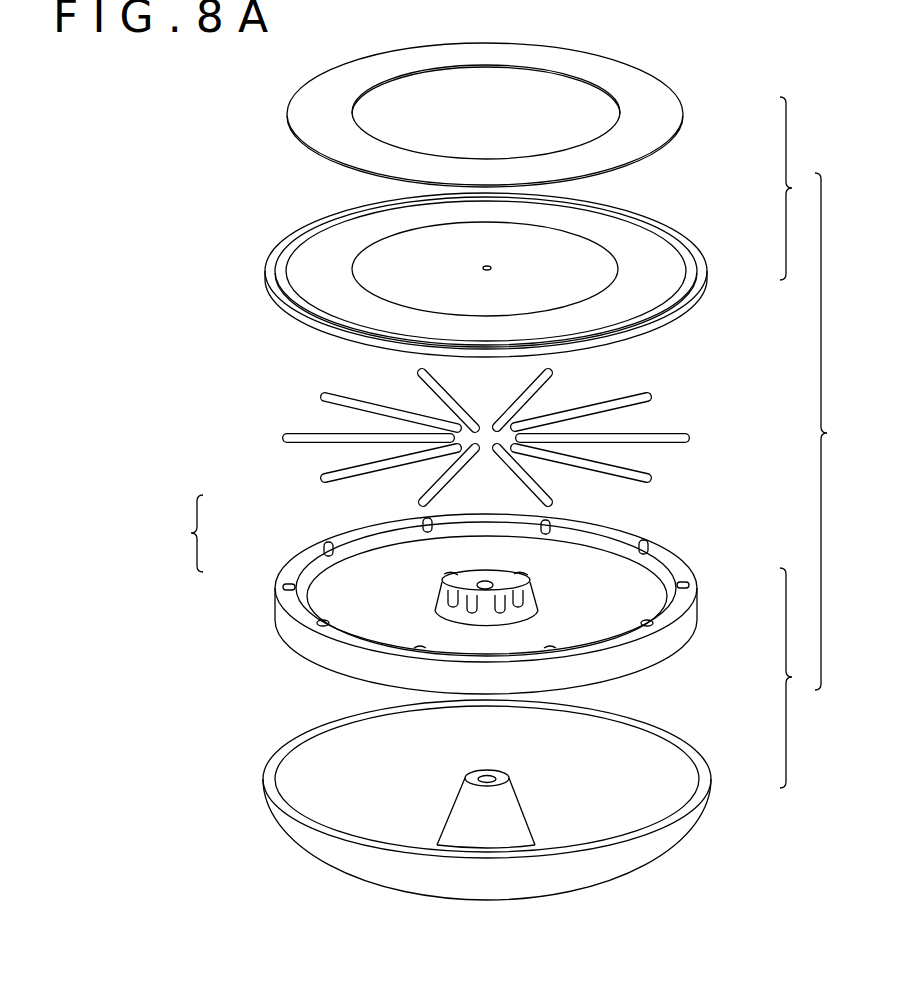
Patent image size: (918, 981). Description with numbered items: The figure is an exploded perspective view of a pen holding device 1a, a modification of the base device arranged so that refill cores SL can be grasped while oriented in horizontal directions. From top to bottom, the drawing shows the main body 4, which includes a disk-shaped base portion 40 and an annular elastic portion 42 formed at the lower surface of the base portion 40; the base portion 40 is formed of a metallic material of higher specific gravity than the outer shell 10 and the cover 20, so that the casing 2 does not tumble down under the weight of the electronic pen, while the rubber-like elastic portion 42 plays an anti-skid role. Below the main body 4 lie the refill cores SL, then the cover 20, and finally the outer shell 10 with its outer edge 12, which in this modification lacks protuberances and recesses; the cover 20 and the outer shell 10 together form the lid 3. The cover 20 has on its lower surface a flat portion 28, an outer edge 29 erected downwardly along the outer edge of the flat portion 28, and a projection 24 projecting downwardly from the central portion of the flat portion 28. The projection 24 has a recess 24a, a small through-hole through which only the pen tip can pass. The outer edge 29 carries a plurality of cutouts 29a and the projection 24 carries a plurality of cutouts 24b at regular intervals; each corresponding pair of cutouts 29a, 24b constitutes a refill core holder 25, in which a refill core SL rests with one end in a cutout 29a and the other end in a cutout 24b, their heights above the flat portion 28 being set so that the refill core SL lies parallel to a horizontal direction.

The pen holding device 1a is at (736, 53).
The casing 2 is at (830, 431).
The lid 3 is at (796, 678).
The main body 4 is at (795, 188).
The elastic portion 42 is at (683, 112).
The base portion 40 is at (707, 270).
The refill core SL is at (685, 438).
The cover 20 is at (469, 594).
The flat portion 28 is at (583, 615).
The outer edge 29 is at (350, 635).
The cutouts 29a is at (330, 548).
The refill core holder 25 is at (184, 533).
The projection 24 is at (480, 581).
The recess 24a is at (490, 565).
The cutouts 24b is at (455, 582).
The outer shell 10 is at (482, 800).
The outer edge 12 is at (268, 758).